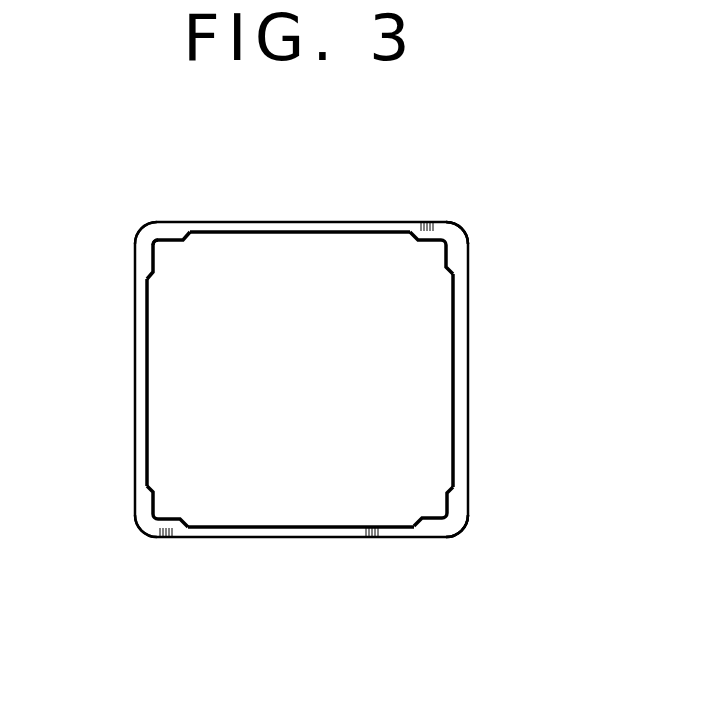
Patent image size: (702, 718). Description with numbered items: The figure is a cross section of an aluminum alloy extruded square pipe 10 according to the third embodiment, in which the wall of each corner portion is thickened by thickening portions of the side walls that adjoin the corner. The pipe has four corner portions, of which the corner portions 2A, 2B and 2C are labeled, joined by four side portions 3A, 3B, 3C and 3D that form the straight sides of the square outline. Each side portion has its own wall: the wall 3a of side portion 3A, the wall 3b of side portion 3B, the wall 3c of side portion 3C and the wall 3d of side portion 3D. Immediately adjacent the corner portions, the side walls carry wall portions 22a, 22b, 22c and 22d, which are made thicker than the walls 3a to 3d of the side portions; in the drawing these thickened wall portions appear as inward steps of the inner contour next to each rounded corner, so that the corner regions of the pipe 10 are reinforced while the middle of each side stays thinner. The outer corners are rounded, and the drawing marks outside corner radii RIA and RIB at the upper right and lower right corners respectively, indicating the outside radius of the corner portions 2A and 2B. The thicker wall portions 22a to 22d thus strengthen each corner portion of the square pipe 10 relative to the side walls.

The square pipe 10 is at (376, 160).
The corner portion 2A is at (483, 221).
The corner portion 2B is at (459, 550).
The corner portion 2C is at (128, 220).
The side portion 3A is at (468, 413).
The side portion 3B is at (337, 539).
The side portion 3C is at (135, 415).
The side portion 3D is at (262, 221).
The wall of side portion 3a is at (458, 350).
The wall of side portion 3b is at (272, 529).
The wall of side portion 3c is at (145, 352).
The wall of side portion 3d is at (334, 231).
The wall portion 22a is at (457, 256).
The wall portion 22b is at (428, 528).
The wall portion 22c is at (152, 258).
The wall portion 22d is at (165, 230).
The upper right corner radius RIA is at (463, 226).
The lower right corner radius RIB is at (463, 529).